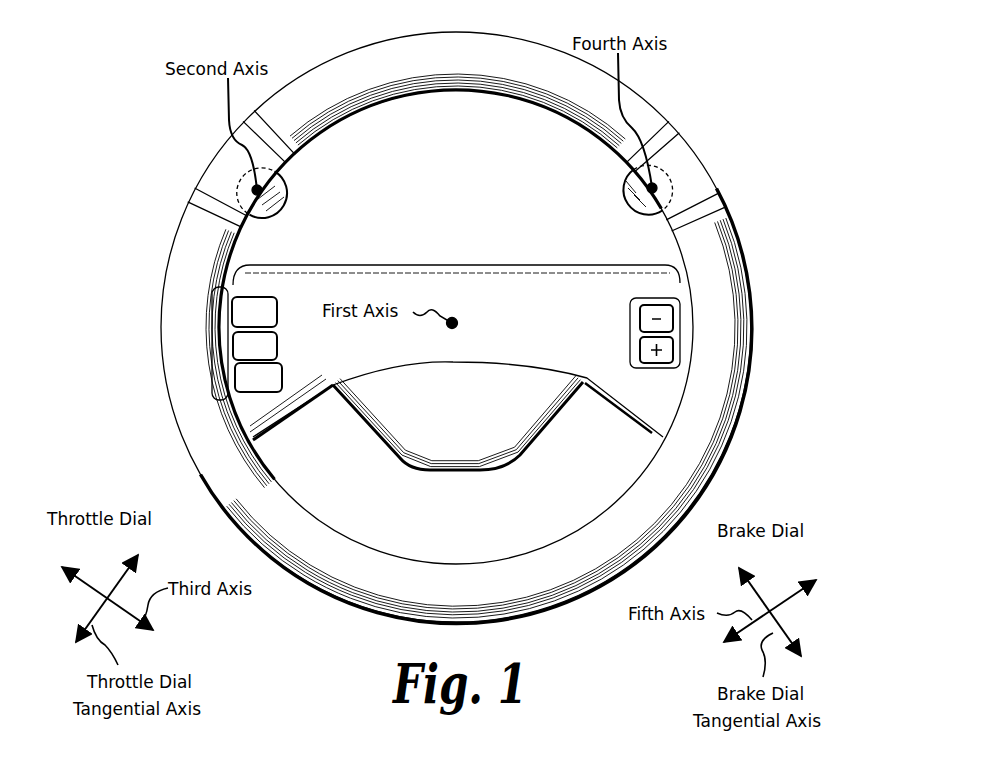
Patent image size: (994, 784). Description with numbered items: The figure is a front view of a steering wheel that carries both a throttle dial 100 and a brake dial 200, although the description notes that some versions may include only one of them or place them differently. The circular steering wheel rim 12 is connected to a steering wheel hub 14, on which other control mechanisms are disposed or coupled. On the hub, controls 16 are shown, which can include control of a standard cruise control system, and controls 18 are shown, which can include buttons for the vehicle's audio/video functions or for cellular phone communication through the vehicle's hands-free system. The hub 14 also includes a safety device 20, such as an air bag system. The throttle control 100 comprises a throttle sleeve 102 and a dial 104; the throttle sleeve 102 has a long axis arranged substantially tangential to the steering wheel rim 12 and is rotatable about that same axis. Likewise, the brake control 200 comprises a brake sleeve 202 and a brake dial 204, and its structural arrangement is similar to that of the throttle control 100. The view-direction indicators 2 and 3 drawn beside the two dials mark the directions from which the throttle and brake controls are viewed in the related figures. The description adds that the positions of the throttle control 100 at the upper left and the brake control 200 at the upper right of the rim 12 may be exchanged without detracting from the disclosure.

The steering wheel rim 12 is at (647, 547).
The steering wheel hub 14 is at (457, 272).
The controls 16 is at (677, 350).
The controls 18 is at (212, 343).
The safety device 20 is at (390, 443).
The throttle dial 100 is at (232, 155).
The throttle sleeve 102 is at (200, 188).
The dial 104 is at (282, 185).
The brake dial 200 is at (671, 153).
The brake sleeve 202 is at (660, 127).
The brake dial 204 is at (633, 193).
The view direction of FIG. 2 is at (291, 214).
The view direction of FIG. 3 is at (623, 213).